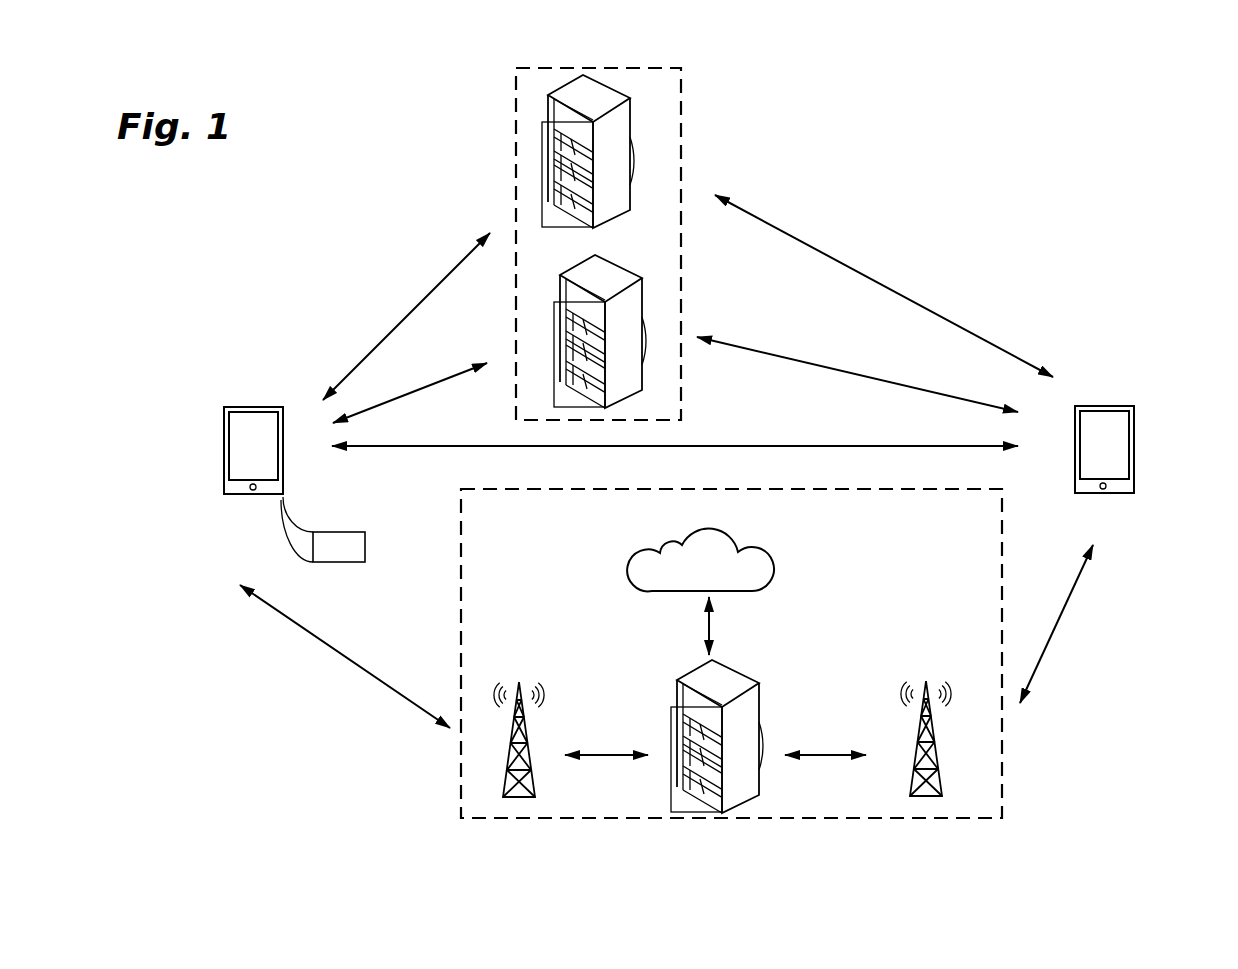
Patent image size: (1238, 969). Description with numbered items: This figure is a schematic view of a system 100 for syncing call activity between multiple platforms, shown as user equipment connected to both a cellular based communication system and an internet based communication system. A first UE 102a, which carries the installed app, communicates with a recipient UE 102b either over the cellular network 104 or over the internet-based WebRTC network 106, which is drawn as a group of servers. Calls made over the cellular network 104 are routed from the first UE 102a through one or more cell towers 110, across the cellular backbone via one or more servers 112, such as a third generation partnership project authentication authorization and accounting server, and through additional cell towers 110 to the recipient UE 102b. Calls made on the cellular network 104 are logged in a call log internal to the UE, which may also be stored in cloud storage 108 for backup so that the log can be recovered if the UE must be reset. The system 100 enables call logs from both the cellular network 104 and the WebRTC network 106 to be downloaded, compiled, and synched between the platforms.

The system 100 is at (290, 232).
The first UE 102a is at (224, 433).
The recipient UE 102b is at (1134, 427).
The cellular network 104 is at (458, 553).
The WebRTC network 106 is at (681, 158).
The cloud storage 108 is at (773, 567).
The cell towers 110 is at (527, 737).
The servers 112 is at (753, 683).